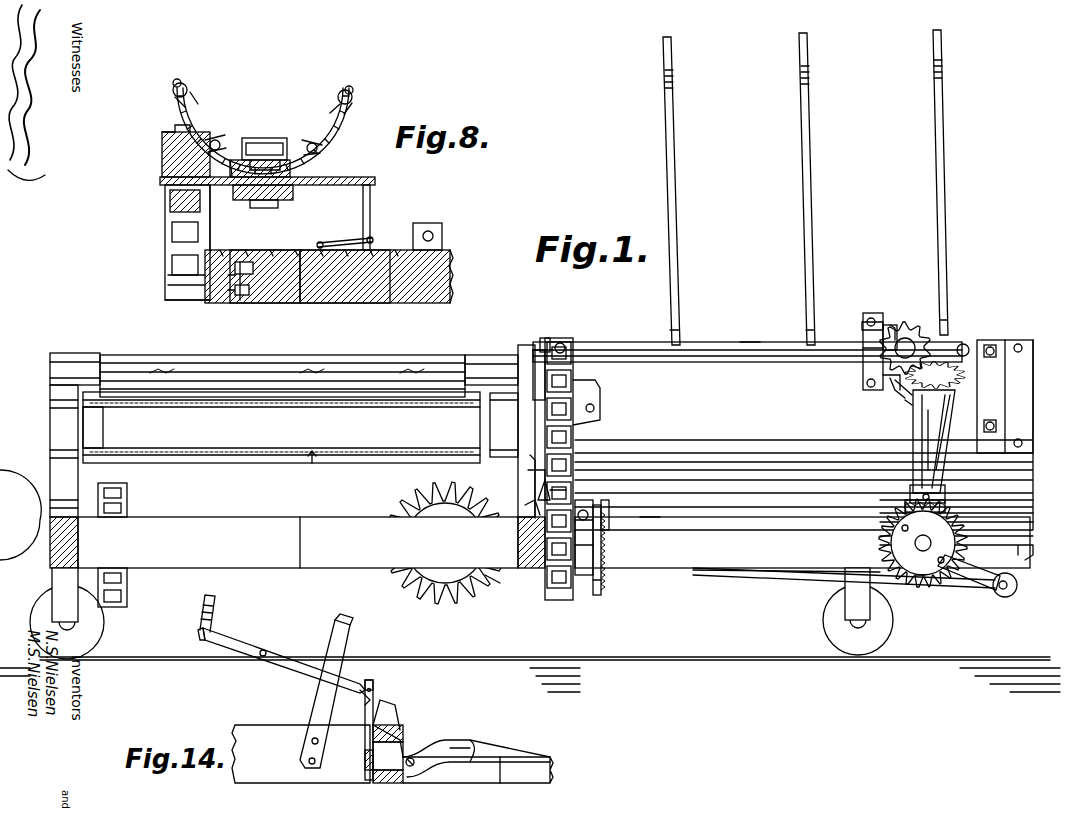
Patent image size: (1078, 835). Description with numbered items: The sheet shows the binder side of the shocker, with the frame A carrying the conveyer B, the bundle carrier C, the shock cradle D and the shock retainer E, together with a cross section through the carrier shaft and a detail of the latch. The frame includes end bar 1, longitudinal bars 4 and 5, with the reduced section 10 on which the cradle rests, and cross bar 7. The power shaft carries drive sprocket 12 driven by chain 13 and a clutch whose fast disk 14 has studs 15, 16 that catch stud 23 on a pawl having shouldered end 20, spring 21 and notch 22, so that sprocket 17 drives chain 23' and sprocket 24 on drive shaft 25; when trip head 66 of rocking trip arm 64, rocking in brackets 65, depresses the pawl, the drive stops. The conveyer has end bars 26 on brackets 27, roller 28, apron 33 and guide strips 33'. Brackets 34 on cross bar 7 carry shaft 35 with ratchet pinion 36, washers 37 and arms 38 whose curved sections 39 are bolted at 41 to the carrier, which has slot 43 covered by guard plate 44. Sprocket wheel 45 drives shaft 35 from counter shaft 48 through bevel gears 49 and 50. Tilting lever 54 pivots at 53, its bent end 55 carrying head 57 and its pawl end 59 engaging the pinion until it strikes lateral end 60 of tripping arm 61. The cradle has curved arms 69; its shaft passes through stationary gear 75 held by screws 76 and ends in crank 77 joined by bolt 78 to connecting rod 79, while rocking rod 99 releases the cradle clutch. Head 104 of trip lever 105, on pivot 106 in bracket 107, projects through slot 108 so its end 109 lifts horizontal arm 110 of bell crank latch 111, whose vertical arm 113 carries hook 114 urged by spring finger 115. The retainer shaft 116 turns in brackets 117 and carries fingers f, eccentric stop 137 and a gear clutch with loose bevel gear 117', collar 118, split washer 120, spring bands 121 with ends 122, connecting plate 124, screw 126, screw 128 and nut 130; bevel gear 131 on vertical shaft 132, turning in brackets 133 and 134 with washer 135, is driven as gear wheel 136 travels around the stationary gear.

In FIG. 1, the end bar 1 is at (105, 538).
In FIG. 8, the longitudinal bar 4 is at (440, 300).
In FIG. 1, the longitudinal bar 4 is at (712, 572).
In FIG. 8, the longitudinal bar 5 is at (212, 300).
In FIG. 1, the longitudinal bar 5 is at (603, 560).
In FIG. 14, the longitudinal bar 5 is at (545, 757).
In FIG. 8, the cross bar 7 is at (400, 300).
In FIG. 1, the cross bar 7 is at (520, 538).
In FIG. 14, the cross bar 7 is at (400, 725).
In FIG. 14, the reduced section of longitudinal bar 10 is at (255, 732).
In FIG. 1, the drive sprocket 12 is at (125, 580).
In FIG. 1, the chain 13 is at (118, 607).
In FIG. 1, the disk 14 is at (602, 527).
In FIG. 1, the stud 15 is at (610, 520).
In FIG. 1, the stud 16 is at (603, 580).
In FIG. 1, the sprocket 17 is at (556, 600).
In FIG. 1, the shouldered inner end of pawl 20 is at (590, 510).
In FIG. 1, the spring 21 is at (533, 472).
In FIG. 1, the notched outer end of pawl 22 is at (595, 495).
In FIG. 1, the stud 23 is at (665, 527).
In FIG. 1, the endless chain 23' is at (597, 399).
In FIG. 1, the sprocket 24 is at (598, 408).
In FIG. 1, the drive shaft 25 is at (533, 475).
In FIG. 1, the angular end bar 26 is at (284, 476).
In FIG. 1, the bracket 27 is at (42, 478).
In FIG. 1, the roller 28 is at (281, 427).
In FIG. 1, the endless apron 33 is at (282, 413).
In FIG. 1, the strip or plate 33' is at (284, 354).
In FIG. 8, the bracket 34 is at (371, 217).
In FIG. 8, the shaft 35 is at (335, 186).
In FIG. 8, the ratchet pinion 36 is at (264, 208).
In FIG. 8, the washer 37 is at (248, 201).
In FIG. 8, the arm 38 is at (232, 186).
In FIG. 1, the arm 38 is at (515, 510).
In FIG. 8, the curved arm section 39 is at (196, 106).
In FIG. 8, the bolt 41 is at (214, 138).
In FIG. 8, the slot 43 is at (285, 158).
In FIG. 8, the guard plate 44 is at (275, 137).
In FIG. 8, the sprocket wheel 45 is at (165, 200).
In FIG. 8, the counter shaft 48 is at (172, 282).
In FIG. 1, the bevel gear 49 is at (452, 603).
In FIG. 1, the bevel gear 50 is at (500, 590).
In FIG. 14, the pivot 53 is at (265, 650).
In FIG. 14, the tilting lever 54 is at (242, 650).
In FIG. 14, the angular bent end 55 is at (210, 640).
In FIG. 14, the head 57 is at (216, 603).
In FIG. 14, the pawl end 59 is at (375, 693).
In FIG. 14, the lateral end 60 is at (353, 620).
In FIG. 14, the tripping arm 61 is at (348, 640).
In FIG. 8, the rocking trip arm 64 is at (432, 224).
In FIG. 8, the bracket 65 is at (426, 231).
In FIG. 1, the trip head 66 is at (582, 500).
In FIG. 1, the curved arm 69 is at (912, 425).
In FIG. 1, the gear wheel 75 is at (922, 580).
In FIG. 1, the screw 76 is at (880, 530).
In FIG. 1, the crank 77 is at (978, 568).
In FIG. 1, the bolt 78 is at (1003, 597).
In FIG. 1, the connecting rod 79 is at (805, 580).
In FIG. 1, the rocking rod 99 is at (560, 495).
In FIG. 14, the head 104 is at (470, 740).
In FIG. 8, the trip lever 105 is at (240, 300).
In FIG. 14, the trip lever 105 is at (437, 750).
In FIG. 14, the pivot 106 is at (455, 762).
In FIG. 8, the bracket 107 is at (244, 300).
In FIG. 8, the slot 108 is at (250, 268).
In FIG. 14, the slot 108 is at (378, 745).
In FIG. 14, the lever end 109 is at (374, 774).
In FIG. 14, the horizontal arm 110 is at (368, 758).
In FIG. 14, the bell crank latch 111 is at (364, 708).
In FIG. 14, the vertical arm 113 is at (372, 725).
In FIG. 14, the lateral hook 114 is at (373, 682).
In FIG. 8, the spring finger 115 is at (345, 237).
In FIG. 1, the shaft 116 is at (770, 355).
In FIG. 1, the bracket 117 is at (789, 325).
In FIG. 1, the bevel gear 117' is at (912, 336).
In FIG. 1, the collar 118 is at (892, 325).
In FIG. 1, the split washer 120 is at (875, 388).
In FIG. 1, the spring band 121 is at (864, 372).
In FIG. 1, the parallel ends of spring bands 122 is at (895, 395).
In FIG. 1, the connecting plate 124 is at (905, 410).
In FIG. 1, the screw 126 is at (895, 388).
In FIG. 1, the screw 128 is at (884, 328).
In FIG. 1, the nut 130 is at (862, 325).
In FIG. 1, the bevel gear 131 is at (960, 378).
In FIG. 1, the vertical shaft 132 is at (916, 440).
In FIG. 1, the upper bracket 133 is at (947, 420).
In FIG. 1, the lower bracket 134 is at (940, 470).
In FIG. 1, the washer 135 is at (962, 395).
In FIG. 1, the gear wheel 136 is at (905, 503).
In FIG. 1, the eccentric stop 137 is at (552, 340).
In FIG. 8, the frame A is at (358, 300).
In FIG. 1, the frame A is at (322, 542).
In FIG. 14, the frame A is at (520, 757).
In FIG. 1, the conveyer B is at (316, 465).
In FIG. 8, the bundle carrier C is at (238, 130).
In FIG. 1, the bundle carrier C is at (528, 348).
In FIG. 1, the shock cradle D is at (804, 450).
In FIG. 1, the shock retainer E is at (752, 342).
In FIG. 1, the retaining finger f is at (676, 218).